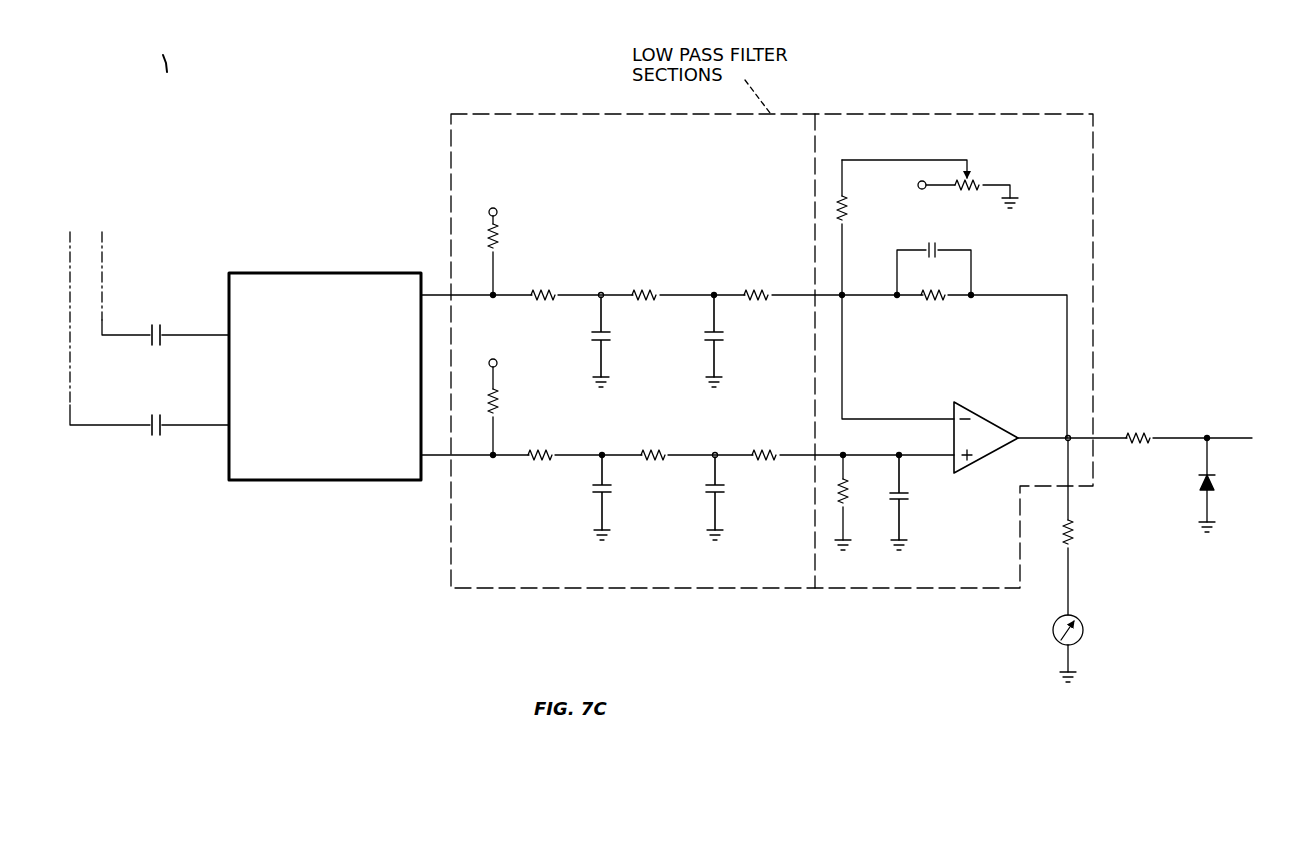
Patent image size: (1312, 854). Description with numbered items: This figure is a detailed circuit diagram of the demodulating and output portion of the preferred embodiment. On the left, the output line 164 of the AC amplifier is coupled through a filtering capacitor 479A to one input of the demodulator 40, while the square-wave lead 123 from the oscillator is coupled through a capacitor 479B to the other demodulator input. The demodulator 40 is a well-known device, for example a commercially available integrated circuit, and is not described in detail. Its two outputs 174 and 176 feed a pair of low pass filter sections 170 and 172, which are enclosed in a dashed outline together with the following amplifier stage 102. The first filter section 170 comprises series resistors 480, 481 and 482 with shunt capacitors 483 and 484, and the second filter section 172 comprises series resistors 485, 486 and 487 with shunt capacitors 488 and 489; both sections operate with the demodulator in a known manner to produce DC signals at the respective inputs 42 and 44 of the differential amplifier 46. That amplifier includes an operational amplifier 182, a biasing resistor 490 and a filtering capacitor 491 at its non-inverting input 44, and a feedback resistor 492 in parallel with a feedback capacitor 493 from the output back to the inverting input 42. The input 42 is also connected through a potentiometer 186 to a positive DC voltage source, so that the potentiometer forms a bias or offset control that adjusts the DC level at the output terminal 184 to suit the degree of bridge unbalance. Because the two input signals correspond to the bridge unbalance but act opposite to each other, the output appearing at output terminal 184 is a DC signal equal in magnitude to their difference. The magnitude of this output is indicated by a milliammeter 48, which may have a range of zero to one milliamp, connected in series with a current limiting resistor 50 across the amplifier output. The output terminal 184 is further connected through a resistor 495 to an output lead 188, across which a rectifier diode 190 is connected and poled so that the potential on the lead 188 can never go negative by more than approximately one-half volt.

The lead 123 is at (68, 255).
The output line 164 is at (106, 252).
The filtering capacitor 479A is at (161, 328).
The capacitor 479B is at (161, 424).
The demodulator 40 is at (284, 272).
The output 174 is at (430, 293).
The output 176 is at (430, 458).
The filter and amplifier circuit 102 is at (1040, 110).
The low pass filter section 170 is at (620, 284).
The low pass filter section 172 is at (576, 483).
The resistor 480 is at (545, 291).
The resistor 481 is at (648, 291).
The resistor 482 is at (760, 291).
The capacitor 483 is at (598, 332).
The capacitor 484 is at (723, 334).
The resistor 485 is at (541, 451).
The resistor 486 is at (651, 451).
The resistor 487 is at (760, 451).
The capacitor 488 is at (607, 486).
The capacitor 489 is at (724, 485).
The biasing resistor 490 is at (847, 486).
The filtering capacitor 491 is at (906, 499).
The feedback resistor 492 is at (928, 300).
The feedback capacitor 493 is at (935, 243).
The potentiometer 186 is at (975, 180).
The differential amplifier 46 is at (994, 417).
The operational amplifier 182 is at (975, 412).
The input 42 is at (953, 417).
The input 44 is at (953, 457).
The output terminal 184 is at (1065, 441).
The resistor 495 is at (1140, 431).
The output lead 188 is at (1238, 434).
The rectifier diode 190 is at (1217, 478).
The current limiting resistor 50 is at (1075, 536).
The milliammeter 48 is at (1052, 628).